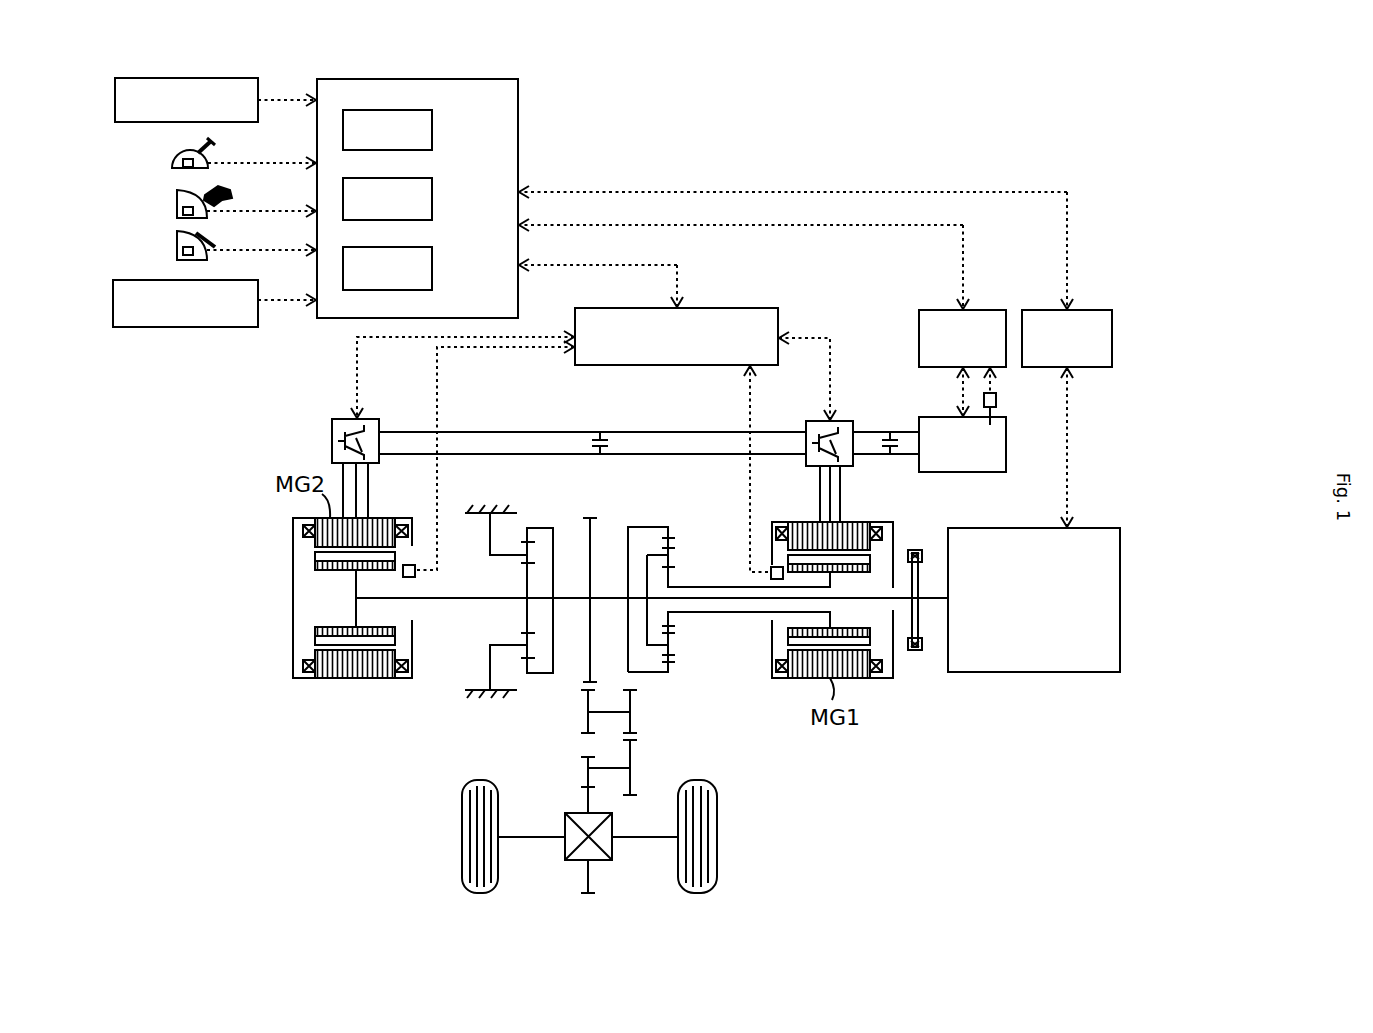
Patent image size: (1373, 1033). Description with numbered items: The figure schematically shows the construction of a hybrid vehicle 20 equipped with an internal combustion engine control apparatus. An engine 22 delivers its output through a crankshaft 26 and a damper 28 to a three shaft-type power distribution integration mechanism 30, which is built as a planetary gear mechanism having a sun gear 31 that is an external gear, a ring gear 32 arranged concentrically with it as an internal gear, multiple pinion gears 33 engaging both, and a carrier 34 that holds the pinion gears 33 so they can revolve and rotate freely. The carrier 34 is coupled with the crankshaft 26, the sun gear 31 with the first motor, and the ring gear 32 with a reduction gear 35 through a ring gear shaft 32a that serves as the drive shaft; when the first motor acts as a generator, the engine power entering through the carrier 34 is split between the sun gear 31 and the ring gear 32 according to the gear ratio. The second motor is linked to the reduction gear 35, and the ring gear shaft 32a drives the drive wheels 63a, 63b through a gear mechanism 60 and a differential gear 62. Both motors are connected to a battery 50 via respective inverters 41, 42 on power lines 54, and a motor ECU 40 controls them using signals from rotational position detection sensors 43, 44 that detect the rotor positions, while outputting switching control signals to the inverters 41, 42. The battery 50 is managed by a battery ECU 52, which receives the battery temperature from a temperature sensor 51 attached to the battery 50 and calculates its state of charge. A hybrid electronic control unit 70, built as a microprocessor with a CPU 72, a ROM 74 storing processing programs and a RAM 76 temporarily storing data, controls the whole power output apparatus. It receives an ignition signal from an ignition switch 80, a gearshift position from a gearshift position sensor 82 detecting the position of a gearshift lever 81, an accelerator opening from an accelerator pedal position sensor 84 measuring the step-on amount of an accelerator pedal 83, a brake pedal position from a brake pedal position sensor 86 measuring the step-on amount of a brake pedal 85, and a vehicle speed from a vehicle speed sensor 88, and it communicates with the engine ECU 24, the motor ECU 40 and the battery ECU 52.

The hybrid vehicle 20 is at (858, 157).
The engine 22 is at (1120, 560).
The engine ECU 24 is at (1085, 310).
The crankshaft 26 is at (930, 599).
The damper 28 is at (917, 652).
The power distribution integration mechanism 30 is at (675, 514).
The sun gear 31 is at (672, 614).
The ring gear 32 is at (672, 667).
The ring gear shaft 32a is at (573, 597).
The pinion gears 33 is at (672, 640).
The carrier 34 is at (642, 565).
The reduction gear 35 is at (533, 506).
The motor ECU 40 is at (720, 308).
The inverter 41 is at (845, 421).
The inverter 42 is at (370, 419).
The rotational position detection sensor 43 is at (774, 566).
The rotational position detection sensor 44 is at (413, 562).
The battery 50 is at (960, 472).
The temperature sensor 51 is at (997, 400).
The battery ECU 52 is at (935, 310).
The power lines 54 is at (657, 454).
The gear mechanism 60 is at (672, 752).
The differential gear 62 is at (612, 850).
The drive wheel 63a is at (462, 872).
The drive wheel 63b is at (717, 872).
The hybrid electronic control unit 70 is at (518, 128).
The CPU 72 is at (432, 130).
The ROM 74 is at (432, 200).
The RAM 76 is at (432, 268).
The ignition switch 80 is at (115, 100).
The gearshift lever 81 is at (200, 149).
The gearshift position sensor 82 is at (181, 163).
The accelerator pedal 83 is at (196, 193).
The accelerator pedal position sensor 84 is at (181, 211).
The brake pedal 85 is at (196, 235).
The brake pedal position sensor 86 is at (181, 251).
The vehicle speed sensor 88 is at (113, 298).